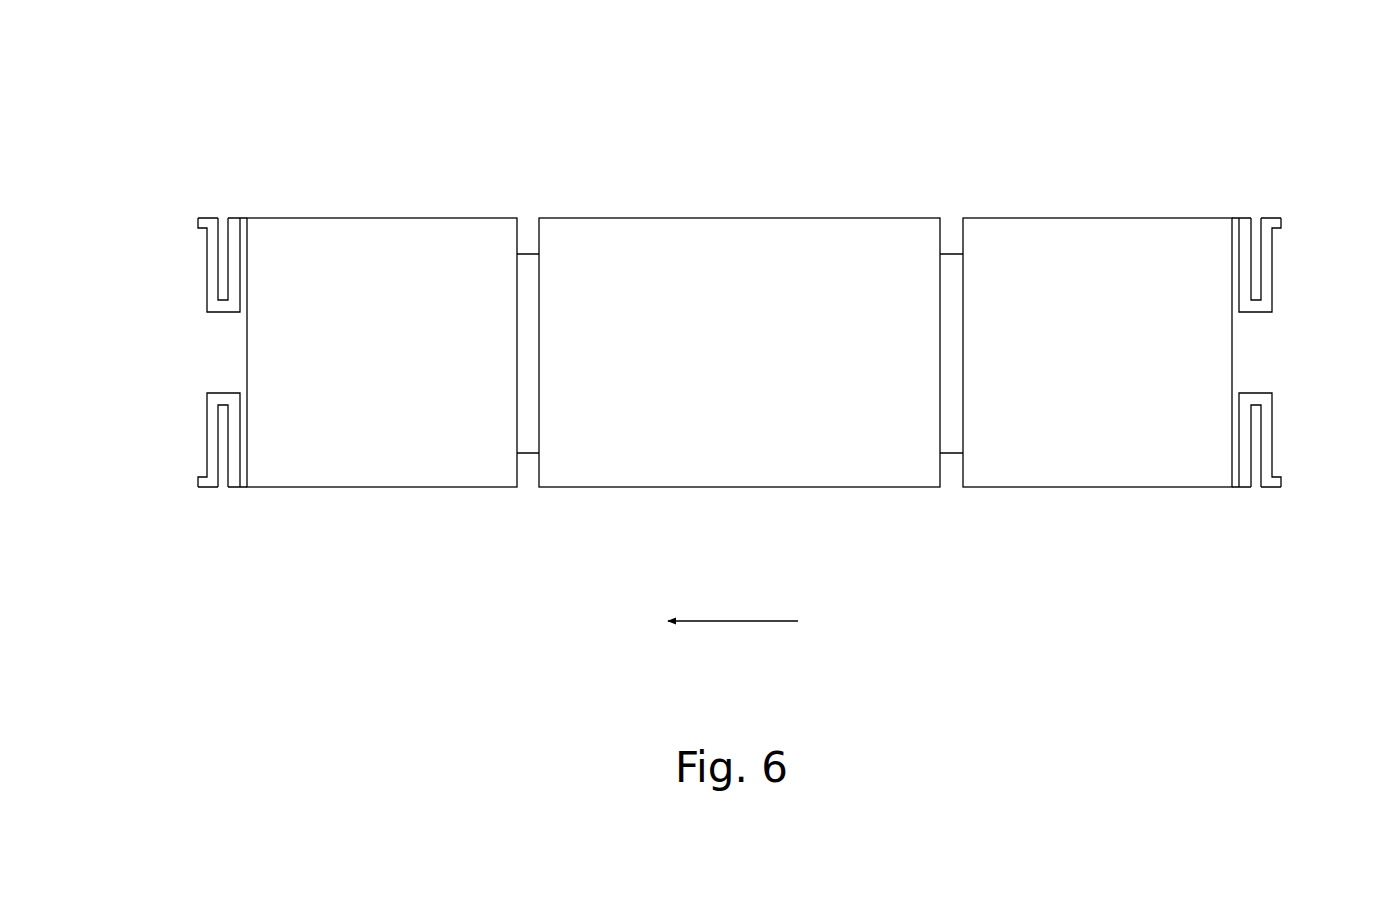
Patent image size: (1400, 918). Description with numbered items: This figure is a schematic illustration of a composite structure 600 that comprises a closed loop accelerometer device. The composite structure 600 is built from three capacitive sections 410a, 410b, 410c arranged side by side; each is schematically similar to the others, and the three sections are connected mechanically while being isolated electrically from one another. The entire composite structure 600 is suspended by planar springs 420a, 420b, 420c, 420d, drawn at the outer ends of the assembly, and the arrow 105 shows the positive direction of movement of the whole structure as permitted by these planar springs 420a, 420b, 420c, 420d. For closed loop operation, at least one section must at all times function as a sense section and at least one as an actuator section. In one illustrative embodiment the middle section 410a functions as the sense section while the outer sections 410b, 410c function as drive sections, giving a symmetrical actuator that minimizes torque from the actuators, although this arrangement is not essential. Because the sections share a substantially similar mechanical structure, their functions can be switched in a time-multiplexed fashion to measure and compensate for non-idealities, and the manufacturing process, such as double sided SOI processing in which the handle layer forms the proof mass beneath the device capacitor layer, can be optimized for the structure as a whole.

The composite structure 600 is at (197, 128).
The middle capacitive section 410a is at (720, 206).
The capacitive section 410b is at (421, 206).
The outer capacitive section 410c is at (1145, 206).
The planar spring 420a is at (195, 463).
The planar spring 420b is at (197, 278).
The planar spring 420c is at (1282, 438).
The planar spring 420d is at (1372, 283).
The arrow 105 is at (705, 598).